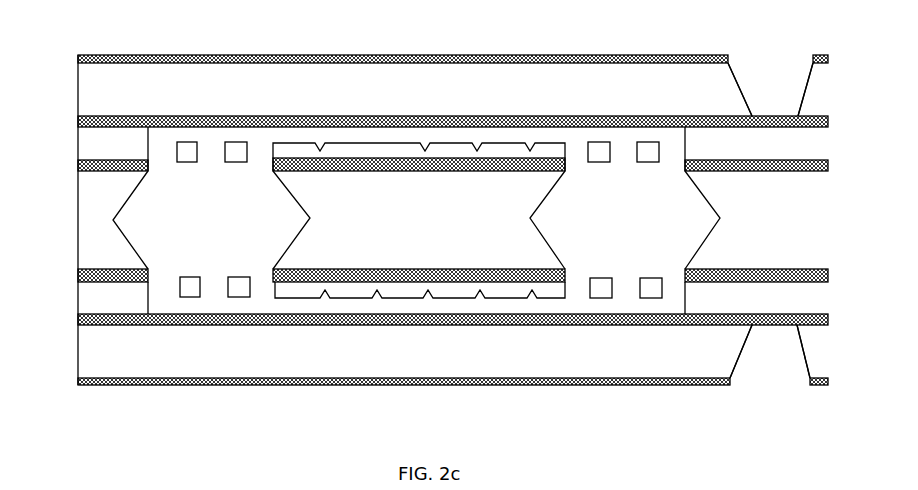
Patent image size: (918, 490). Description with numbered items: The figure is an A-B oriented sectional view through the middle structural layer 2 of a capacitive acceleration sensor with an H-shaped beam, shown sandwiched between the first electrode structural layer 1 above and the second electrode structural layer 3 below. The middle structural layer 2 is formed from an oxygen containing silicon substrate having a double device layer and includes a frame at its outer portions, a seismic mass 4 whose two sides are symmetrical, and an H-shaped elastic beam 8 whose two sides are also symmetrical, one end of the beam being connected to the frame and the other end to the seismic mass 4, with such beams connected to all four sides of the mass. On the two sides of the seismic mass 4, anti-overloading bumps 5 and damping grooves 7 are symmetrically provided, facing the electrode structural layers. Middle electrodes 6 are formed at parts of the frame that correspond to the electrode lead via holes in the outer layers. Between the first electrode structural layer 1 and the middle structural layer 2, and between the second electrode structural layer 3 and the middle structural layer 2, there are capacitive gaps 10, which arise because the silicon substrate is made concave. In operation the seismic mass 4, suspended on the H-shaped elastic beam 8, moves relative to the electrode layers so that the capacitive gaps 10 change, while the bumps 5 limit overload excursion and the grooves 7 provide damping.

The first electrode structural layer 1 is at (58, 63).
The middle structural layer 2 is at (58, 127).
The second electrode structural layer 3 is at (58, 322).
The seismic mass 4 is at (345, 202).
The anti-overloading bumps 5 is at (502, 130).
The middle electrode 6 is at (754, 114).
The damping grooves 7 is at (377, 301).
The H-shaped elastic beam 8 is at (186, 296).
The capacitive gap 10 is at (192, 128).